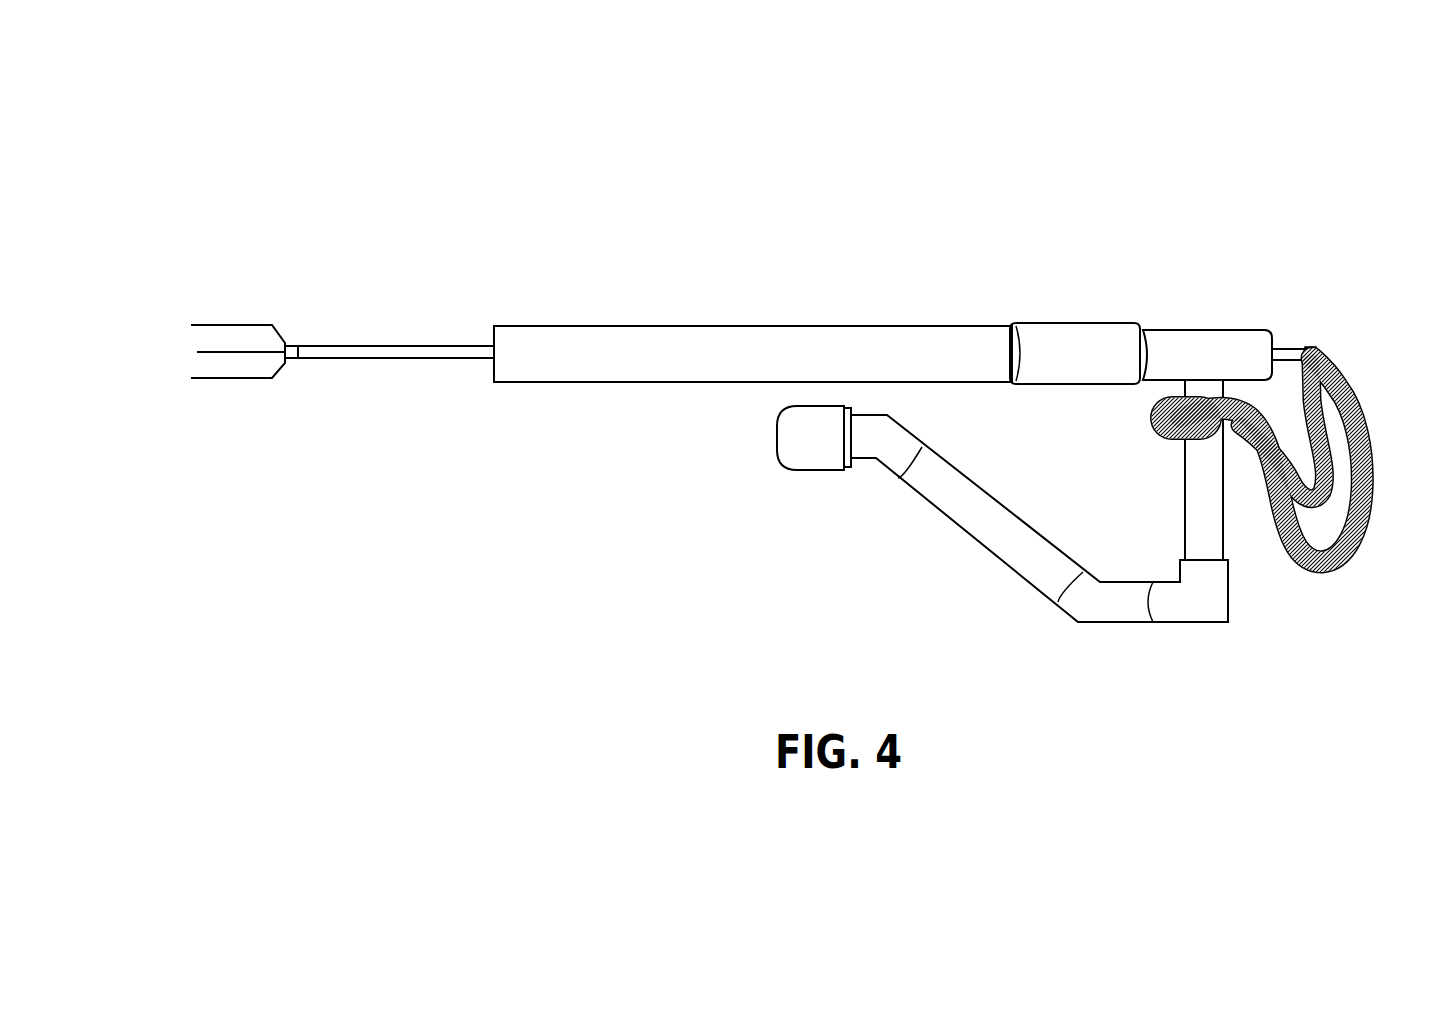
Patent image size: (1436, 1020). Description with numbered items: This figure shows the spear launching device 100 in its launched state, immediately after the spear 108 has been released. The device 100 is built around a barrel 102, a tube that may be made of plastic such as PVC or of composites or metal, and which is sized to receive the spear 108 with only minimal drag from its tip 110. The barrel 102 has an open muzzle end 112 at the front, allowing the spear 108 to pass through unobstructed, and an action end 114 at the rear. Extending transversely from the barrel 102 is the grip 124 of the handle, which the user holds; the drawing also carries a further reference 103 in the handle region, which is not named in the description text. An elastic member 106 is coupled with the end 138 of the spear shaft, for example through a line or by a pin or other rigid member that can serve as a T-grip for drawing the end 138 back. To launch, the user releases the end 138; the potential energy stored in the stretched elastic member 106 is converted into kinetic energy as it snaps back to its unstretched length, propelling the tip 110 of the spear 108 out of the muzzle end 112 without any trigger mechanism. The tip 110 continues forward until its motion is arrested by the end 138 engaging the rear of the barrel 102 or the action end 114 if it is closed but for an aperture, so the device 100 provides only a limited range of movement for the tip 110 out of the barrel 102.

The spear launching device 100 is at (504, 156).
The barrel 102 is at (742, 337).
The actuation assembly 103 is at (1211, 670).
The elastic member 106 is at (1313, 570).
The spear 108 is at (410, 352).
The tip 110 is at (248, 323).
The muzzle end 112 is at (485, 378).
The action end 114 is at (1265, 340).
The grip 124 is at (1192, 487).
The end 138 is at (1308, 347).